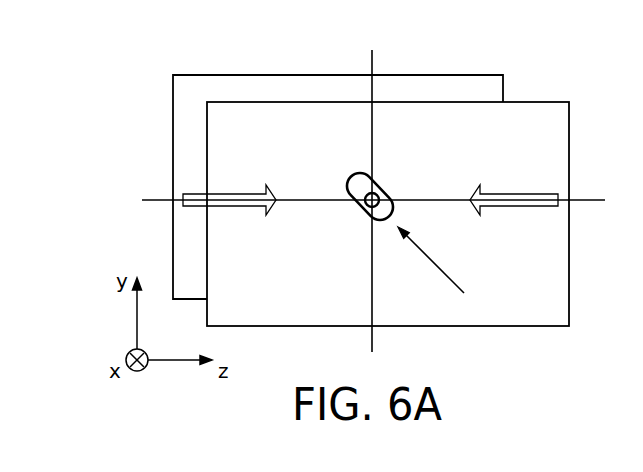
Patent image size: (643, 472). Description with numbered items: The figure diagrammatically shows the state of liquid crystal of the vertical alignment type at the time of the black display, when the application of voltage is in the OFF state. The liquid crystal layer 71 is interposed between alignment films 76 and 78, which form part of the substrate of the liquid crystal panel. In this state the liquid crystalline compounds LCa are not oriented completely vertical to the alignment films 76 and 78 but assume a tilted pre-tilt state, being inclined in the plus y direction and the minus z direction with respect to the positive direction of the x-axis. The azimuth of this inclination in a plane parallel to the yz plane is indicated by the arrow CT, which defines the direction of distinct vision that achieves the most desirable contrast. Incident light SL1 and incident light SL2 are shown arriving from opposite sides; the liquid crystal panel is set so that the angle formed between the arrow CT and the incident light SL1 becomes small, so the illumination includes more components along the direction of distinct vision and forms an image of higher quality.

The liquid crystal layer 71 is at (296, 86).
The alignment film 78 is at (443, 78).
The alignment film 76 is at (531, 104).
The incident light SL2 is at (186, 193).
The incident light SL1 is at (556, 193).
The liquid crystalline compounds LCa is at (378, 186).
The arrow indicating direction of distinct vision CT is at (440, 267).